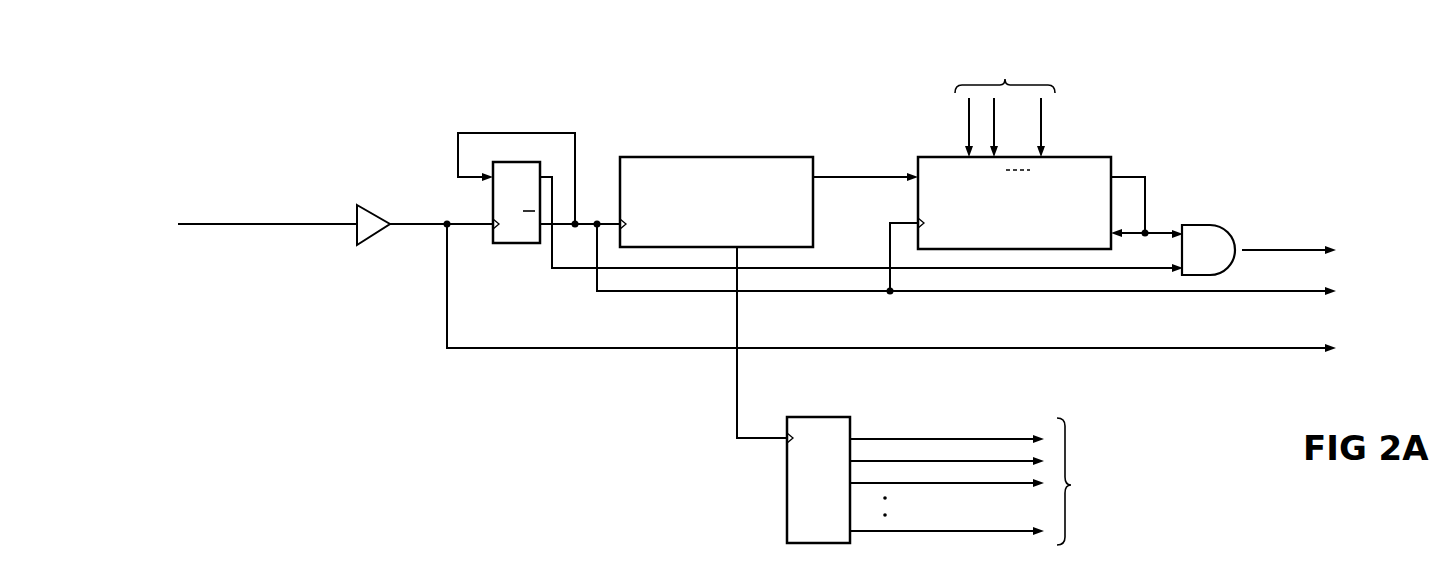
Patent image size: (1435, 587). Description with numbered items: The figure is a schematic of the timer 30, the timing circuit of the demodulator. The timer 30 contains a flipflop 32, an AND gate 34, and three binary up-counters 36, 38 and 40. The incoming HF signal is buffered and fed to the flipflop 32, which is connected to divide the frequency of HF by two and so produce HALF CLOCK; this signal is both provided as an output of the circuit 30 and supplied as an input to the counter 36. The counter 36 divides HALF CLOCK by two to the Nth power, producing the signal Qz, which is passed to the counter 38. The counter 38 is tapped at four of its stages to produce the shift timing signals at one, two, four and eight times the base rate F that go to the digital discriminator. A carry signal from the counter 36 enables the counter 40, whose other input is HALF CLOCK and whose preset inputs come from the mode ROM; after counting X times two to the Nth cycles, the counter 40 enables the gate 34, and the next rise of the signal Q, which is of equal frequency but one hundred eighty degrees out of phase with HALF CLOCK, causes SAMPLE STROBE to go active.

The timer 30 is at (432, 448).
The flipflop 32 is at (493, 197).
The AND gate 34 is at (1213, 225).
The binary up-counter 36 is at (783, 150).
The binary up-counter 38 is at (825, 412).
The binary up-counter 40 is at (1068, 153).